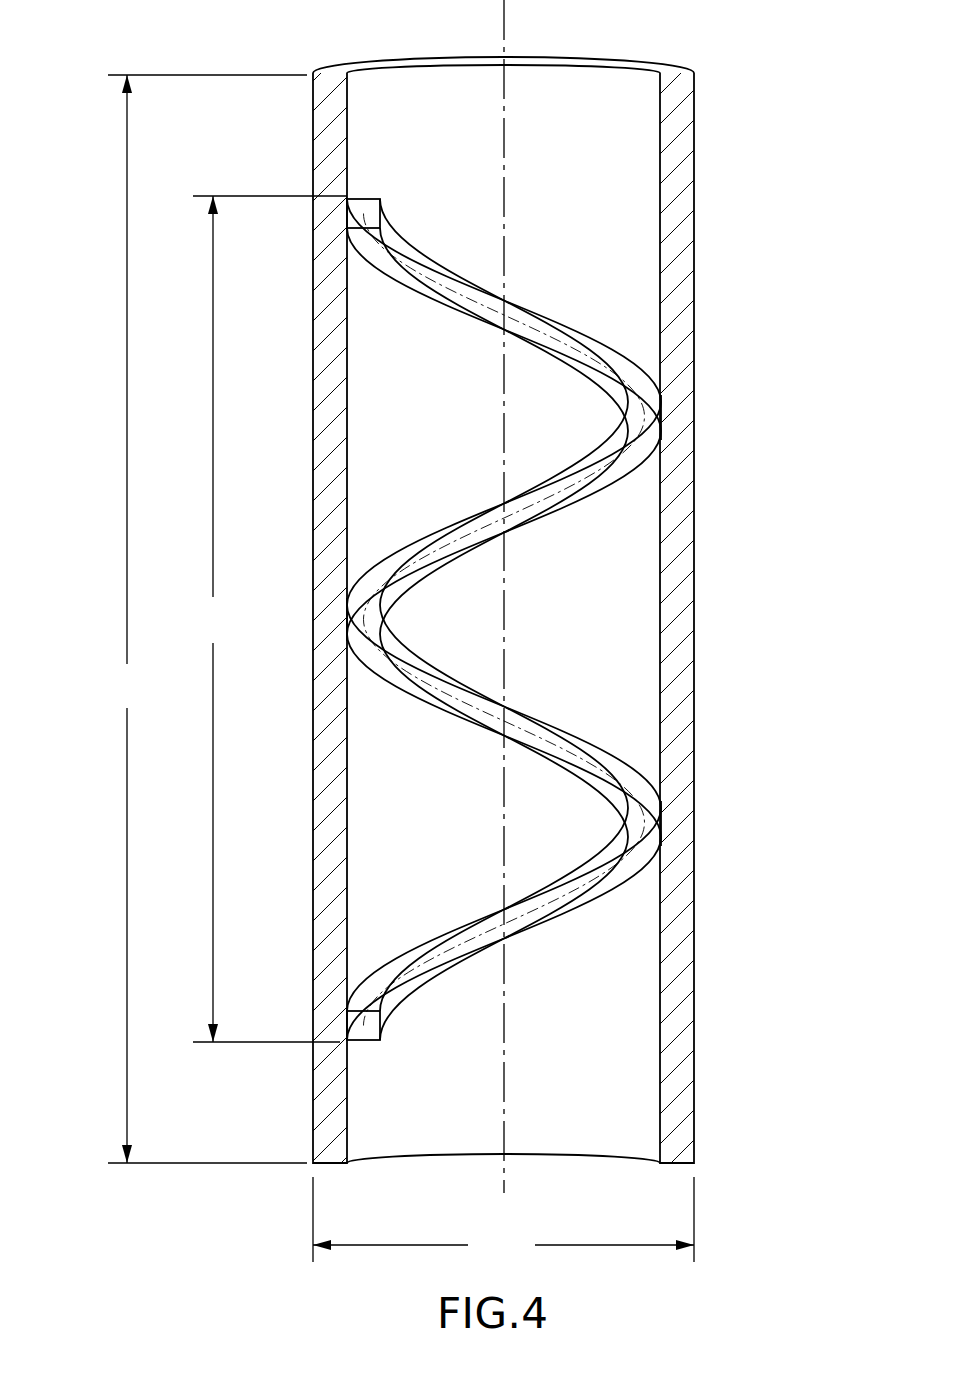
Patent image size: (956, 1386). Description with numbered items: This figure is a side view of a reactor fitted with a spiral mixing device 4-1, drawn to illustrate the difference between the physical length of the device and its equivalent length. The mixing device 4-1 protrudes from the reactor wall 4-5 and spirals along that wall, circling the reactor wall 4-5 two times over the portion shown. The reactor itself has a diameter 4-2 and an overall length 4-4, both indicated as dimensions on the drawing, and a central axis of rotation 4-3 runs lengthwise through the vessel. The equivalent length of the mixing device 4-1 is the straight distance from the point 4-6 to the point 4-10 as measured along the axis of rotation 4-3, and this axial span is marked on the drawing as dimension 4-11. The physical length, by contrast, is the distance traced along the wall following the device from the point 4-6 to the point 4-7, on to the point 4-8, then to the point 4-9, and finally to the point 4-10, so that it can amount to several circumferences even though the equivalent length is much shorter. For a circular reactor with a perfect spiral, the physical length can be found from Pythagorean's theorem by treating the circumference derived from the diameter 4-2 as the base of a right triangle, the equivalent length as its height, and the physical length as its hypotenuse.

The mixing device 4-1 is at (425, 234).
The diameter 4-2 is at (503, 1219).
The axis of rotation 4-3 is at (509, 20).
The length 4-4 is at (202, 619).
The reactor wall 4-5 is at (697, 177).
The point 4-6 is at (342, 212).
The point 4-7 is at (666, 422).
The point 4-8 is at (342, 611).
The point 4-9 is at (666, 827).
The point 4-10 is at (342, 1021).
The axial length of helical vane 4-11 is at (262, 619).